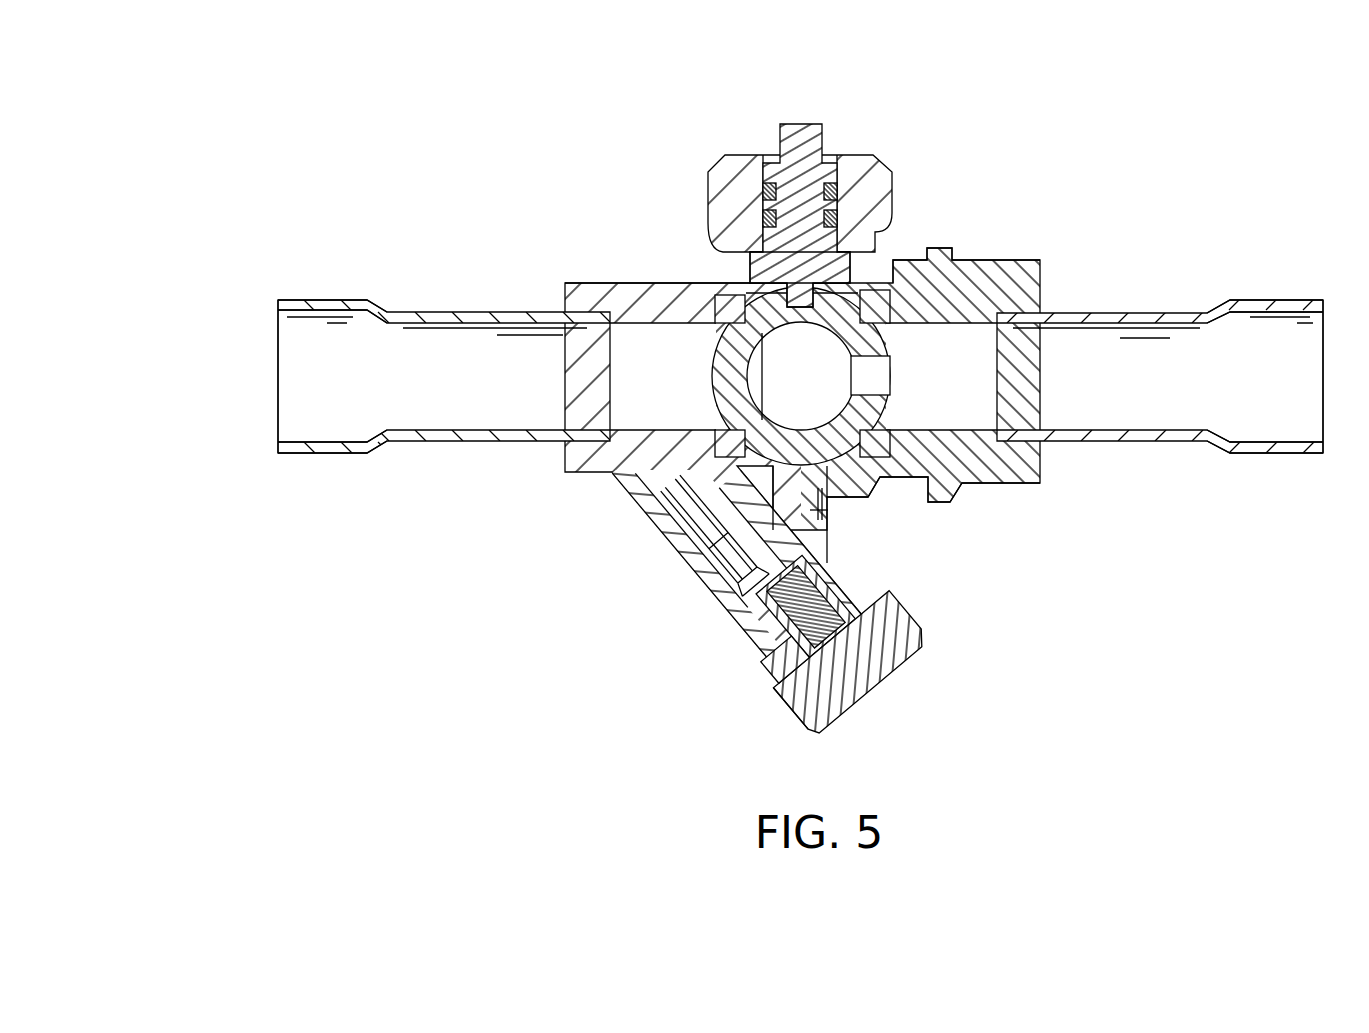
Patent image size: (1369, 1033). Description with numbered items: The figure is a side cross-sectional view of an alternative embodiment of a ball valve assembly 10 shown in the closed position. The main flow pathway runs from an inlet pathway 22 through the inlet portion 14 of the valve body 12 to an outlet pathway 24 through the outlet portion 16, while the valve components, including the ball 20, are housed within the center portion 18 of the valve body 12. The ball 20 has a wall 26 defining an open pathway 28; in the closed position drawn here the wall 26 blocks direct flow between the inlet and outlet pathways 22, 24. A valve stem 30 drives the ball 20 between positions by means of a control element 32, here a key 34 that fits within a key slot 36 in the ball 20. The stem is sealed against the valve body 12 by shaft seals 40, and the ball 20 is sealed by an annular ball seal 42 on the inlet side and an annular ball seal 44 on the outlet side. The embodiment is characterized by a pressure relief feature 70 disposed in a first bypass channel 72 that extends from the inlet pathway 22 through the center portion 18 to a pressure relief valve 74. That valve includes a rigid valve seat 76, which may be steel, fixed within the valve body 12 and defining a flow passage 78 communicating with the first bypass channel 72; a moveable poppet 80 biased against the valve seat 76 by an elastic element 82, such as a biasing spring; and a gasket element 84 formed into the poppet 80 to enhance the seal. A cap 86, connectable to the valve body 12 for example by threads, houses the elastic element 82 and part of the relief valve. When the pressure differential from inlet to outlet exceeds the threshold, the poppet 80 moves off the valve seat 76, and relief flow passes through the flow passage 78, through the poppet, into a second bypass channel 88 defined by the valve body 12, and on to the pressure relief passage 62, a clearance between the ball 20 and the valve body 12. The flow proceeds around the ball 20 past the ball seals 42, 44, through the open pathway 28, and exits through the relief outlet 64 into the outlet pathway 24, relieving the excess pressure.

The ball valve assembly 10 is at (1042, 142).
The valve body 12 is at (520, 147).
The inlet portion 14 is at (340, 300).
The outlet portion 16 is at (1190, 300).
The center portion 18 is at (737, 155).
The ball 20 is at (730, 362).
The inlet pathway 22 is at (335, 415).
The outlet pathway 24 is at (1197, 403).
The wall 26 is at (712, 312).
The open pathway 28 is at (833, 350).
The valve stem 30 is at (801, 124).
The control element 32 is at (838, 193).
The key 34 is at (762, 215).
The key slot 36 is at (805, 318).
The shaft seal 40 is at (848, 250).
The ball seal 42 is at (750, 292).
The ball seal 44 is at (882, 313).
The pressure relief passage 62 is at (860, 432).
The relief outlet 64 is at (877, 377).
The pressure relief feature 70 is at (721, 593).
The first bypass channel 72 is at (648, 447).
The pressure relief valve 74 is at (723, 584).
The rigid valve seat 76 is at (720, 517).
The flow passage 78 is at (720, 563).
The poppet 80 is at (767, 592).
The elastic element 82 is at (868, 692).
The gasket element 84 is at (815, 545).
The cap 86 is at (804, 716).
The second bypass channel 88 is at (853, 508).